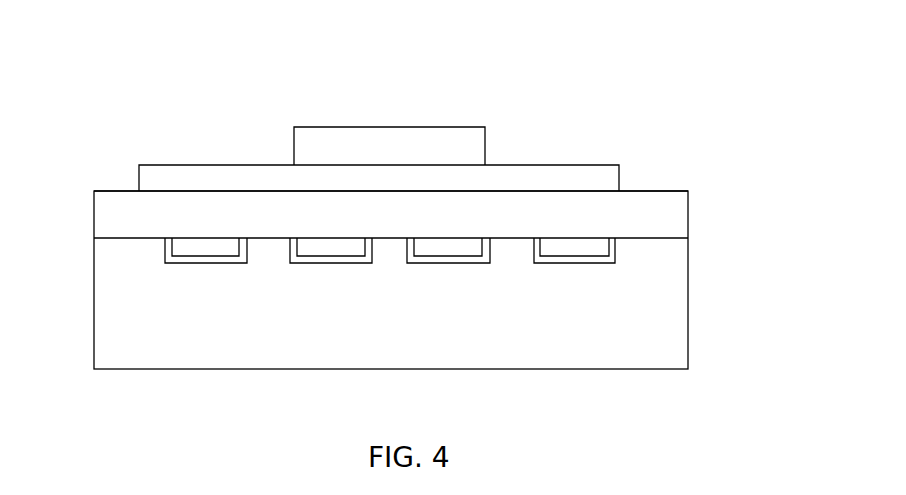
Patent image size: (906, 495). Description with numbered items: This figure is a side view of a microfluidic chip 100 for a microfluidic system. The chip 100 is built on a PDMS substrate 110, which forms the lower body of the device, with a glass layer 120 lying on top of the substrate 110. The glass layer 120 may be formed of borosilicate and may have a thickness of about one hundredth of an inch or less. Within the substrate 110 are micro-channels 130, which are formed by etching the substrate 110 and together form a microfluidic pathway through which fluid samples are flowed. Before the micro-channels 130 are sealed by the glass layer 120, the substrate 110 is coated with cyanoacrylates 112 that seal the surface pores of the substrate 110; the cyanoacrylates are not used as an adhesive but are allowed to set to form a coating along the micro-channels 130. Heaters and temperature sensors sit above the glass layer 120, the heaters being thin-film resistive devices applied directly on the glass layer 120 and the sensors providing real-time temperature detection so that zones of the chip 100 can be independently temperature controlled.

The microfluidic chip 100 is at (391, 215).
The PDMS substrate 110 is at (665, 315).
The cyanoacrylates 112 is at (535, 263).
The glass layer 120 is at (665, 222).
The micro-channels 130 is at (190, 250).